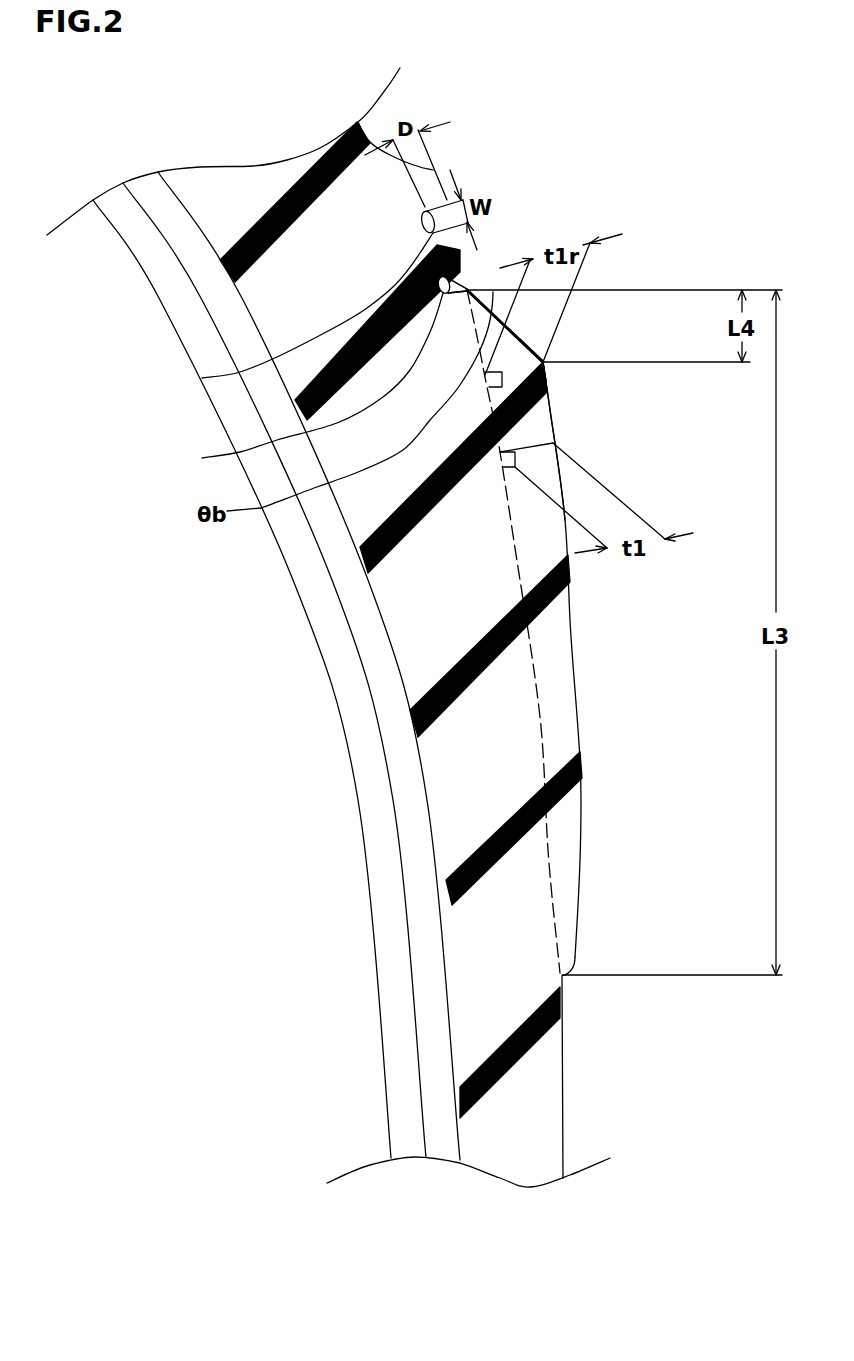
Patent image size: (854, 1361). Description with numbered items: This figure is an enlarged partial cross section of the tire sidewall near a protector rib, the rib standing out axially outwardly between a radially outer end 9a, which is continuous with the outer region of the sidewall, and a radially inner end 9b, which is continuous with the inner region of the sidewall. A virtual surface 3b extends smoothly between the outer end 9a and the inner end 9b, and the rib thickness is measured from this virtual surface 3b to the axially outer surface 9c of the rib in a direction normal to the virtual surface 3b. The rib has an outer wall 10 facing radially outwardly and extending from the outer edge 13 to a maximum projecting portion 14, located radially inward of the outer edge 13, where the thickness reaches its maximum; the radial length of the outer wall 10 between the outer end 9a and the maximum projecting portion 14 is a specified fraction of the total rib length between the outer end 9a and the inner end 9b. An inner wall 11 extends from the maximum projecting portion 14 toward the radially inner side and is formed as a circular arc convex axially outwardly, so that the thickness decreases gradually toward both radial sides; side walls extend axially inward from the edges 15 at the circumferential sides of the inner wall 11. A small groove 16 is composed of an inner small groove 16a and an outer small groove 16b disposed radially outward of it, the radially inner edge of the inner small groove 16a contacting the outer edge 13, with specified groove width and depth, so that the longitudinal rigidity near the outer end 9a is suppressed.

The virtual surface 3b is at (540, 717).
The radially outer end 9a is at (468, 290).
The radially inner end 9b is at (562, 977).
The axially outer surface 9c is at (553, 430).
The outer wall 10 is at (518, 333).
The inner wall 11 is at (577, 614).
The outer edge 13 is at (468, 290).
The maximum projecting portion 14 is at (543, 362).
The edges 15 is at (518, 333).
The small groove 16 is at (112, 370).
The inner small groove 16a is at (202, 458).
The outer small groove 16b is at (202, 378).